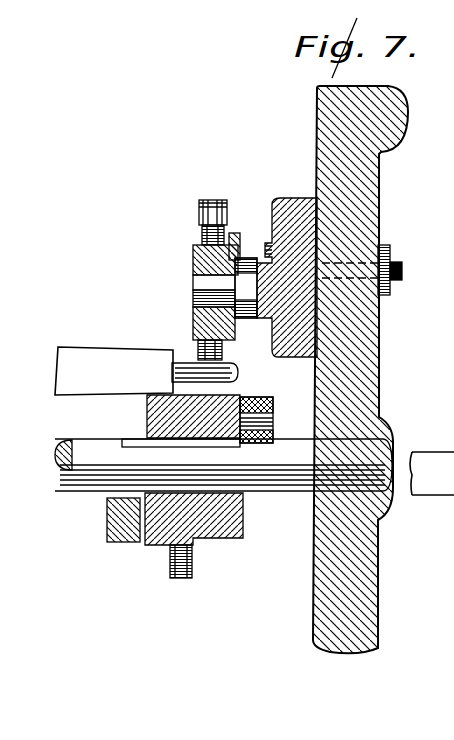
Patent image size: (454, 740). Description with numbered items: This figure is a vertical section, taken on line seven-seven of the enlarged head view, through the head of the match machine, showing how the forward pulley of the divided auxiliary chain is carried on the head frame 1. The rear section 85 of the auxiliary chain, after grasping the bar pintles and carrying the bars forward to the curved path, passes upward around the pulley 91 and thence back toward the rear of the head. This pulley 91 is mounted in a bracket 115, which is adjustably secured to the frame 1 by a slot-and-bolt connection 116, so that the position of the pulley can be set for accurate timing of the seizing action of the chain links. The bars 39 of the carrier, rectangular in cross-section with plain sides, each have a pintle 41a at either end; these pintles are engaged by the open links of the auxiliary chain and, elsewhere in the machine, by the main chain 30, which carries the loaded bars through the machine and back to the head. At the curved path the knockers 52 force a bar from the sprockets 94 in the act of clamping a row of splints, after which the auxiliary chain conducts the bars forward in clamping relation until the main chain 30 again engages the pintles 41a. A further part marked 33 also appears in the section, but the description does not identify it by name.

The frame 1 is at (382, 193).
The slot-and-bolt connection 116 is at (393, 295).
The bracket 115 is at (278, 184).
The rear section of the auxiliary chain 85 is at (222, 186).
The pulley 91 is at (193, 262).
The bar 39 is at (114, 371).
The pintle 41a is at (238, 375).
The main chain 30 is at (273, 405).
The shaft 33 is at (254, 467).
The knocker 52 is at (107, 527).
The sprocket 94 is at (193, 545).